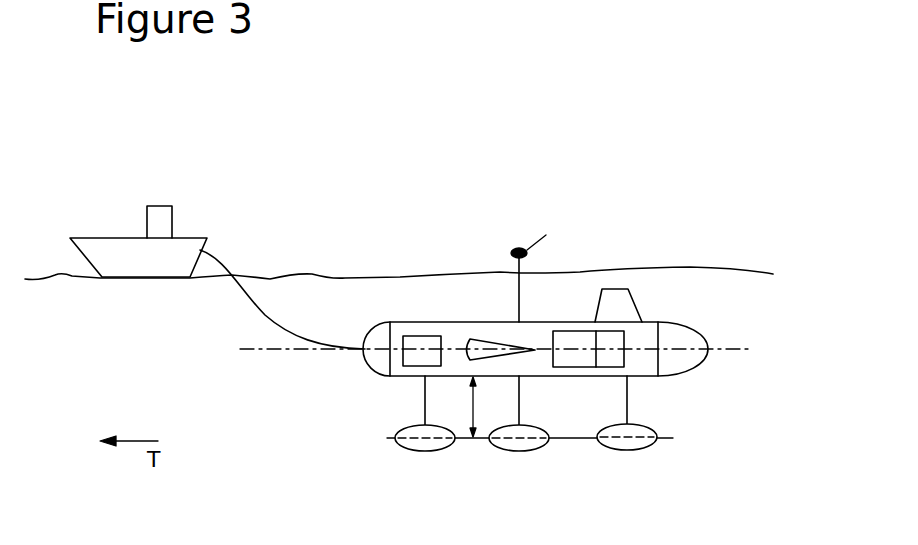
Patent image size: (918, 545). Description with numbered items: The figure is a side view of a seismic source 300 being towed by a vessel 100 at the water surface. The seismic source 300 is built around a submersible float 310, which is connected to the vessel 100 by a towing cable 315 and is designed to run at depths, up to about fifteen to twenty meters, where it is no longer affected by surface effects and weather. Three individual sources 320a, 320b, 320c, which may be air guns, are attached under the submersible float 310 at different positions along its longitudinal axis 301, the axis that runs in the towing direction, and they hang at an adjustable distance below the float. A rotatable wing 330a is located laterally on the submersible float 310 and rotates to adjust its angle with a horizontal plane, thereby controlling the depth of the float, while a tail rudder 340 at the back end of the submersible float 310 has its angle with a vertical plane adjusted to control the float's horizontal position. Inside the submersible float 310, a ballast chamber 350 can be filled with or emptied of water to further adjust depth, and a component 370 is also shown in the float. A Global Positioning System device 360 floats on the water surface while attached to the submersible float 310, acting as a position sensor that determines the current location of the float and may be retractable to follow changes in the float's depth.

The vessel 100 is at (175, 232).
The towing cable 315 is at (233, 278).
The longitudinal axis 301 is at (277, 352).
The seismic source 300 is at (554, 356).
The submersible float 310 is at (397, 378).
The control module 370 is at (403, 337).
The rotatable wing 330a is at (492, 342).
The ballast chamber 350 is at (613, 363).
The tail rudder 340 is at (632, 298).
The Global Positioning System (GPS) device 360 is at (512, 250).
The individual source 320a is at (440, 449).
The individual source 320b is at (540, 449).
The individual source 320c is at (643, 447).